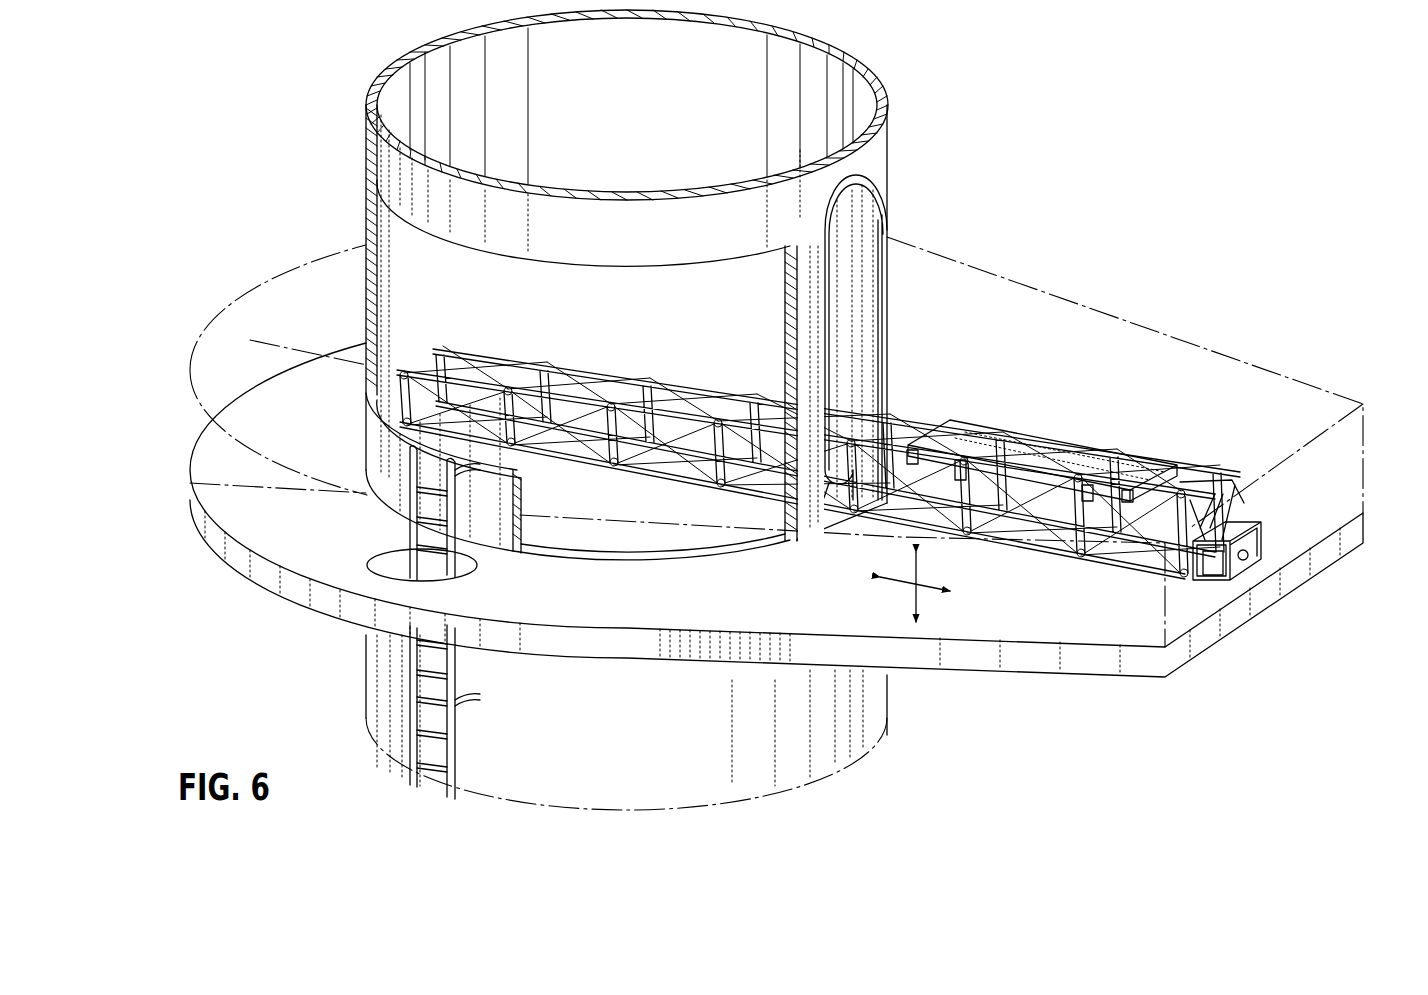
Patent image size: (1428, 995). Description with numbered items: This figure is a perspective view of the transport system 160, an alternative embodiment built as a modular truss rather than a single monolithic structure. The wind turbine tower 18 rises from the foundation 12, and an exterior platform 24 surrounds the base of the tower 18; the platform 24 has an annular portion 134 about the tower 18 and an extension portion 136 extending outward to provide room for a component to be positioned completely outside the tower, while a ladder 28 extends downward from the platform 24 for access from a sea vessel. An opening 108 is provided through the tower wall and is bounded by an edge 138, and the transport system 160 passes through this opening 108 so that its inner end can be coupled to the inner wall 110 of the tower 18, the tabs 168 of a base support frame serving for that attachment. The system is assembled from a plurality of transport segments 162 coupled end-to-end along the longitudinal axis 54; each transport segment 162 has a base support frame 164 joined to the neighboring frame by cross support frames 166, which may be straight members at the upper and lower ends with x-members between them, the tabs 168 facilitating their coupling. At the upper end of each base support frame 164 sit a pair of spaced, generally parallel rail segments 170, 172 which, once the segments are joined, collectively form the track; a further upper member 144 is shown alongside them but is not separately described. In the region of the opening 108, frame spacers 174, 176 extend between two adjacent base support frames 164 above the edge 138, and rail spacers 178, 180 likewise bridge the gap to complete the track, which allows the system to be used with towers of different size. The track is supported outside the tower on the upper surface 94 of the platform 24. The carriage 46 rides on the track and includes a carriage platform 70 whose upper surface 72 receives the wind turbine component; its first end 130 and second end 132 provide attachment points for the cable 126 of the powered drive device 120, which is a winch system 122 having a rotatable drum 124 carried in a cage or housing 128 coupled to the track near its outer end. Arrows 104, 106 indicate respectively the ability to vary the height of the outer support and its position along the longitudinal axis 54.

The foundation 12 is at (889, 690).
The tower 18 is at (890, 139).
The exterior platform 24 is at (1117, 680).
The ladder 28 is at (456, 762).
The carriage 46 is at (1181, 465).
The longitudinal axis 54 is at (247, 343).
The carriage platform 70 is at (1066, 436).
The upper surface 72 is at (1025, 440).
The upper surface 94 is at (1072, 620).
The arrow 104 is at (908, 597).
The arrow 106 is at (928, 583).
The opening 108 is at (878, 221).
The inner wall 110 is at (383, 290).
The powered drive device 120 is at (1208, 591).
The winch system 122 is at (1243, 578).
The rotatable drum 124 is at (1248, 560).
The cable 126 is at (1211, 494).
The cage or housing 128 is at (1246, 532).
The first end of the carriage 130 is at (1196, 480).
The second end of the carriage 132 is at (935, 433).
The annular portion 134 is at (217, 548).
The extension portion 136 is at (1037, 664).
The edge 138 is at (840, 485).
The top chord 144 is at (714, 394).
The transport system 160 is at (1149, 419).
The transport segments 162 is at (499, 344).
The base support frame 164 is at (606, 466).
The cross support frames 166 is at (556, 435).
The tabs 168 is at (405, 372).
The rail segment 170 is at (598, 390).
The rail segment 172 is at (683, 394).
The frame spacer 174 is at (845, 455).
The frame spacer 176 is at (880, 445).
The rail spacer 178 is at (868, 440).
The rail spacer 180 is at (895, 440).